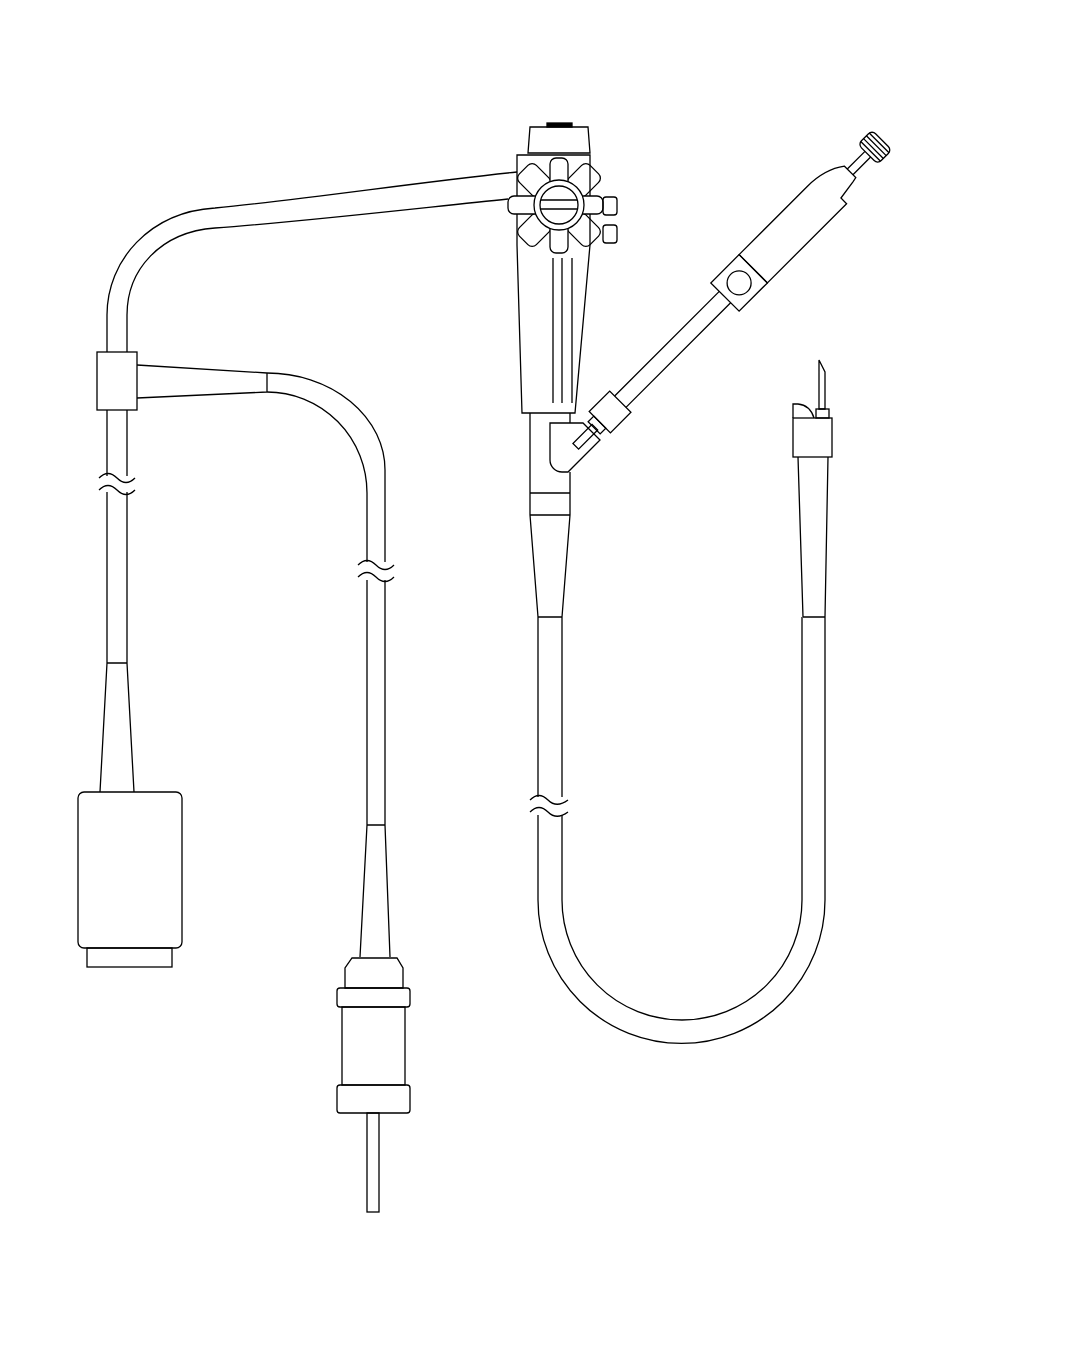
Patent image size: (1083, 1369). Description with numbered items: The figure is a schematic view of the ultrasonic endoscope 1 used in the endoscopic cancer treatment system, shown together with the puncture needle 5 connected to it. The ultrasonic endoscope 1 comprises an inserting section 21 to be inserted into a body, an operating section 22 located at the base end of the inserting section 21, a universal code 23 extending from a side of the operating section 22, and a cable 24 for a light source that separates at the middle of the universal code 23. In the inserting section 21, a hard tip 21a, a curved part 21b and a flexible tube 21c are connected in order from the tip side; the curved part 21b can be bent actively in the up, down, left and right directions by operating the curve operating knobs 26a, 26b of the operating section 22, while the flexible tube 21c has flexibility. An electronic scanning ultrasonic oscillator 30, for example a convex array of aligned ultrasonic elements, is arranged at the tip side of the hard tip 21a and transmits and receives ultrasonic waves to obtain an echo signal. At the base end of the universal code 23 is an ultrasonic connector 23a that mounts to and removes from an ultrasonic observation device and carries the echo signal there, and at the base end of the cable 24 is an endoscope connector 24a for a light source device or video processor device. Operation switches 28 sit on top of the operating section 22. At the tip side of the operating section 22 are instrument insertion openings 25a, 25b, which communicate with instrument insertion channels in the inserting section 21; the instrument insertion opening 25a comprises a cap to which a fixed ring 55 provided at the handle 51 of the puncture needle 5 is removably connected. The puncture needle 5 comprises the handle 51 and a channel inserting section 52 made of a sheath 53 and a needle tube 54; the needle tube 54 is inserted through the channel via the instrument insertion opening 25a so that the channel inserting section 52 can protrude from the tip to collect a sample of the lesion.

The ultrasonic endoscope 1 is at (349, 110).
The puncture needle 5 is at (769, 150).
The inserting section 21 is at (682, 972).
The hard tip 21a is at (822, 440).
The curved part 21b is at (817, 522).
The flexible tube 21c is at (817, 800).
The operating section 22 is at (494, 331).
The universal code 23 is at (145, 242).
The ultrasonic connector 23a is at (165, 870).
The cable for light source 24 is at (375, 508).
The endoscope connector 24a is at (342, 1043).
The instrument insertion opening 25a is at (586, 463).
The instrument insertion opening 25b is at (622, 444).
The curve operating knob 26a is at (602, 201).
The curve operating knob 26b is at (598, 178).
The operation switches 28 is at (602, 130).
The ultrasonic oscillator 30 is at (797, 405).
The handle 51 is at (785, 261).
The channel inserting section 52 is at (922, 360).
The sheath 53 is at (830, 415).
The needle tube 54 is at (825, 378).
The fixed ring 55 is at (603, 400).